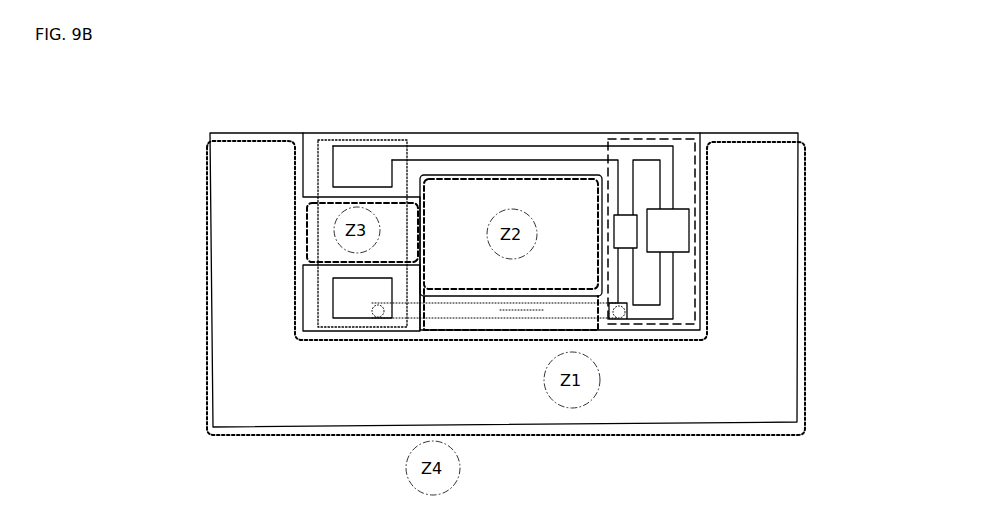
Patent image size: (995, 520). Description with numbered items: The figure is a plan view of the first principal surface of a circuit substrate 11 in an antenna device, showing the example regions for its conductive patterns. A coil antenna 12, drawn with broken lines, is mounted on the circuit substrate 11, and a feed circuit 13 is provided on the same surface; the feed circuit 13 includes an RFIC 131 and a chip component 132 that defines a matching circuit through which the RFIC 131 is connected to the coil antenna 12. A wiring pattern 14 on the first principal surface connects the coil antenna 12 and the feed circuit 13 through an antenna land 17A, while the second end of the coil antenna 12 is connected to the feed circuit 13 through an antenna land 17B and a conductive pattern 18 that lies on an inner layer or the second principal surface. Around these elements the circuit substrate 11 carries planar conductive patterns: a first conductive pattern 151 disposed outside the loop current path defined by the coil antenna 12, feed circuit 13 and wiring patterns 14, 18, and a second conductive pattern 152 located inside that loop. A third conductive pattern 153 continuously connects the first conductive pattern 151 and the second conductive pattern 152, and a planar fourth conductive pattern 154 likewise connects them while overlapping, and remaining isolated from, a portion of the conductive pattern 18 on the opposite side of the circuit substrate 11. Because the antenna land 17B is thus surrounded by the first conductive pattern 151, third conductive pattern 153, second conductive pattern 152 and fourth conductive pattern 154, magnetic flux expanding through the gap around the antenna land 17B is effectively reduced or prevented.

The circuit substrate 11 is at (305, 133).
The coil antenna 12 is at (410, 139).
The feed circuit 13 is at (688, 137).
The RFIC 131 is at (668, 230).
The chip component 132 is at (627, 232).
The wiring pattern 14 is at (560, 155).
The first conductive pattern 151 is at (262, 158).
The second conductive pattern 152 is at (503, 190).
The third conductive pattern 153 is at (328, 242).
The fourth conductive pattern 154 is at (497, 330).
The antenna land 17A is at (363, 160).
The antenna land 17B is at (367, 305).
The conductive pattern 18 is at (523, 313).